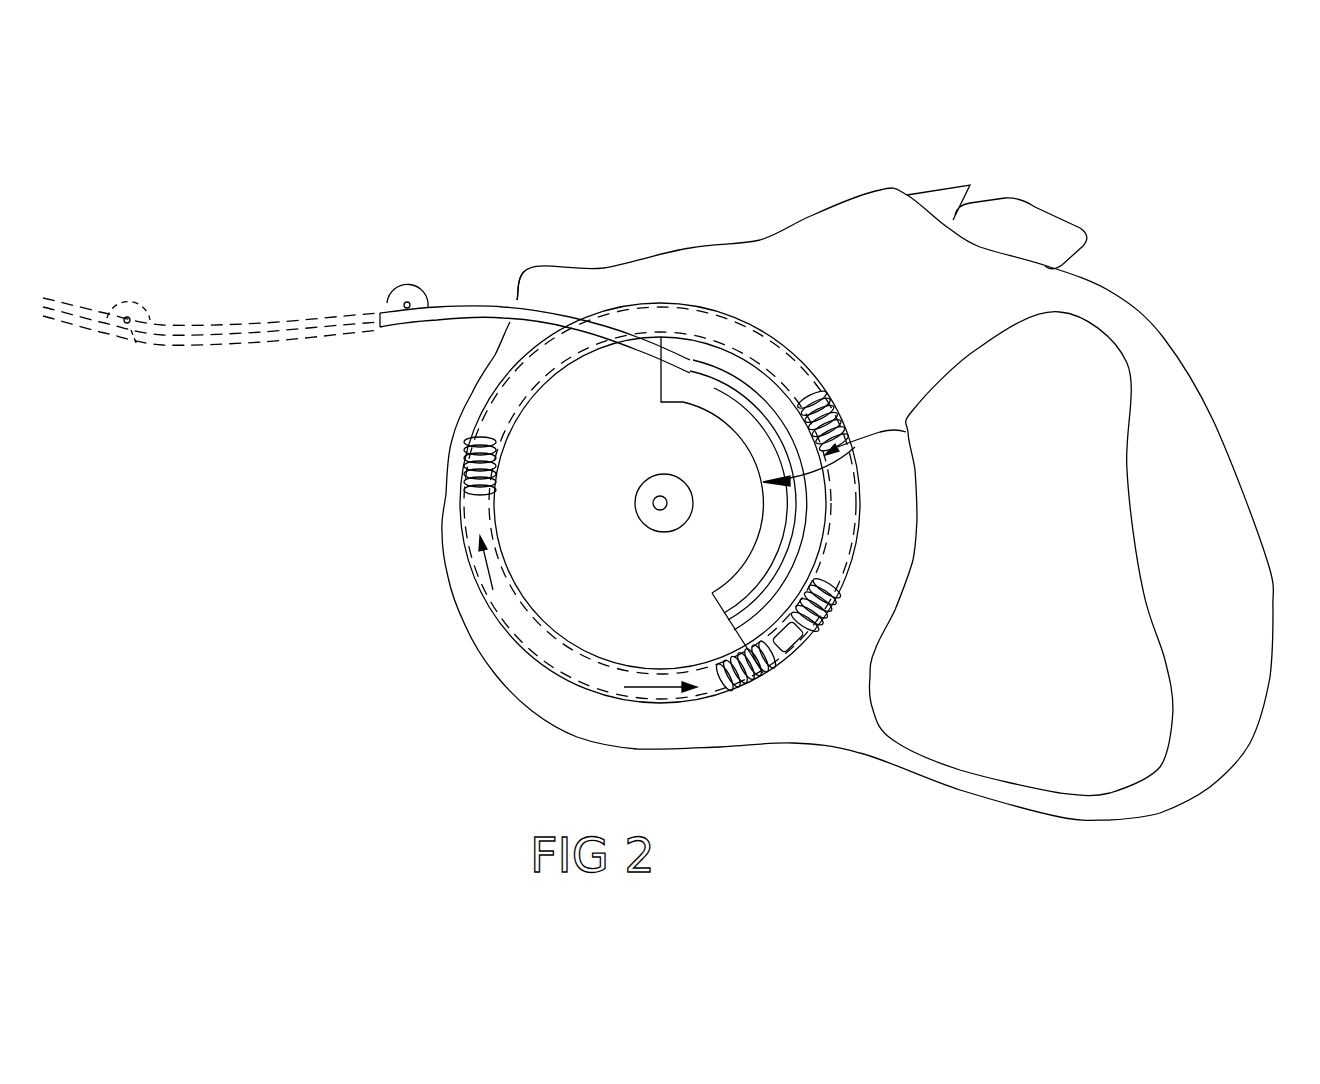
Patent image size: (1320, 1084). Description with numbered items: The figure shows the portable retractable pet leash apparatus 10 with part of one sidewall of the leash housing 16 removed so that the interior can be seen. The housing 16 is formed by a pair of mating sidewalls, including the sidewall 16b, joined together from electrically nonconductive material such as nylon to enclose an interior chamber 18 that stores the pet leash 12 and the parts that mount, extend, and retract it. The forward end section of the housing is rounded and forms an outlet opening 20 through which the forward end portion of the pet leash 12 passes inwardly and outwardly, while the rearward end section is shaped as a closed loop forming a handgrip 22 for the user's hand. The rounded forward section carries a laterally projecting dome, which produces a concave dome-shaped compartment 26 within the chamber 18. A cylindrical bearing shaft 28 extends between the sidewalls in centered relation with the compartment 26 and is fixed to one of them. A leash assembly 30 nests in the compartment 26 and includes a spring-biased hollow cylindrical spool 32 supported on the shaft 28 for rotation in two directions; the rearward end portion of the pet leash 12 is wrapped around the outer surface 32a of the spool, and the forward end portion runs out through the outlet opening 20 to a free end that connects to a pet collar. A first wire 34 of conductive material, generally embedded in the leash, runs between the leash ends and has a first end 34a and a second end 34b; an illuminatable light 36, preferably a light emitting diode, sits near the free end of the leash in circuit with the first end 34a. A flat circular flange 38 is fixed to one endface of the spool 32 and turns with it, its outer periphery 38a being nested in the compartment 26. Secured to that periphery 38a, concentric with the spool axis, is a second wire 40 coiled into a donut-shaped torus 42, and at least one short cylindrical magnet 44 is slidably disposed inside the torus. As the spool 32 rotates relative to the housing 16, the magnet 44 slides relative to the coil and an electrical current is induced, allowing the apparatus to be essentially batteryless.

The portable retractable pet leash apparatus 10 is at (393, 206).
The pet leash 12 is at (192, 303).
The leash housing 16 is at (428, 423).
The sidewall 16b is at (447, 463).
The interior chamber 18 is at (472, 505).
The outlet opening 20 is at (516, 293).
The handgrip 22 is at (972, 787).
The dome-shaped compartment 26 is at (735, 333).
The bearing shaft 28 is at (655, 505).
The leash assembly 30 is at (906, 432).
The spool 32 is at (767, 505).
The outer surface of the spool 32a is at (830, 535).
The first wire 34 is at (477, 307).
The first end of the first wire 34a is at (133, 345).
The second end of the first wire 34b is at (853, 560).
The illuminatable light 36 is at (413, 287).
The circular flange 38 is at (780, 380).
The outer periphery of the flange 38a is at (752, 377).
The second wire 40 is at (737, 685).
The torus-shaped coil 42 is at (757, 672).
The magnet 44 is at (805, 650).